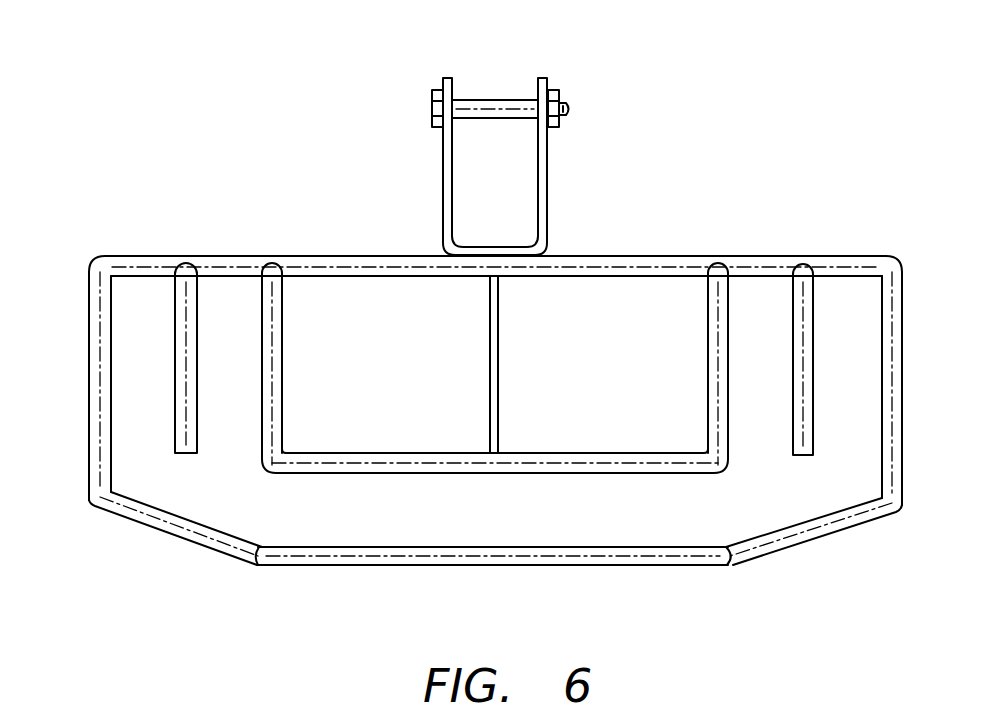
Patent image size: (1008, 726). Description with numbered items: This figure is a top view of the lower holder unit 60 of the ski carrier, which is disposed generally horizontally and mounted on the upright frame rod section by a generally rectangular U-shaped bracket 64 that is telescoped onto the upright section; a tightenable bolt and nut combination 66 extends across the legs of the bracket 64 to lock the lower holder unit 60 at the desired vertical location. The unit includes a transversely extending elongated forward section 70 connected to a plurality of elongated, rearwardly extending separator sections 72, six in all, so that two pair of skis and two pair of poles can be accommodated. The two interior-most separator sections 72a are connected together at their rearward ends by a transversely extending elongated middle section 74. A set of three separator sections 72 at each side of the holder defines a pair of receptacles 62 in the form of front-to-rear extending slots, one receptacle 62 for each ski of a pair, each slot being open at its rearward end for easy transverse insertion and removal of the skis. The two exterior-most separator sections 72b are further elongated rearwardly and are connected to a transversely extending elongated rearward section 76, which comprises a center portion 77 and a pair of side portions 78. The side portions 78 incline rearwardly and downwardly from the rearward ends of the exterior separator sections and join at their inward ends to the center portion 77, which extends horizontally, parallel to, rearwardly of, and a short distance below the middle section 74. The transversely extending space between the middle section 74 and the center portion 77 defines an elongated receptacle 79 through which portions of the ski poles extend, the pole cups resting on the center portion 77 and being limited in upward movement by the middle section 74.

The lower holder unit 60 is at (715, 250).
The receptacle 62 is at (765, 312).
The U-shaped bracket 64 is at (548, 170).
The bolt and nut combination 66 is at (490, 100).
The forward section 70 is at (342, 254).
The separator section 72 is at (175, 392).
The interior-most separator section 72a is at (282, 316).
The exterior-most separator section 72b is at (88, 458).
The middle section 74 is at (400, 462).
The rearward section 76 is at (851, 539).
The center portion 77 is at (643, 547).
The side portion 78 is at (220, 553).
The receptacle 79 is at (330, 518).